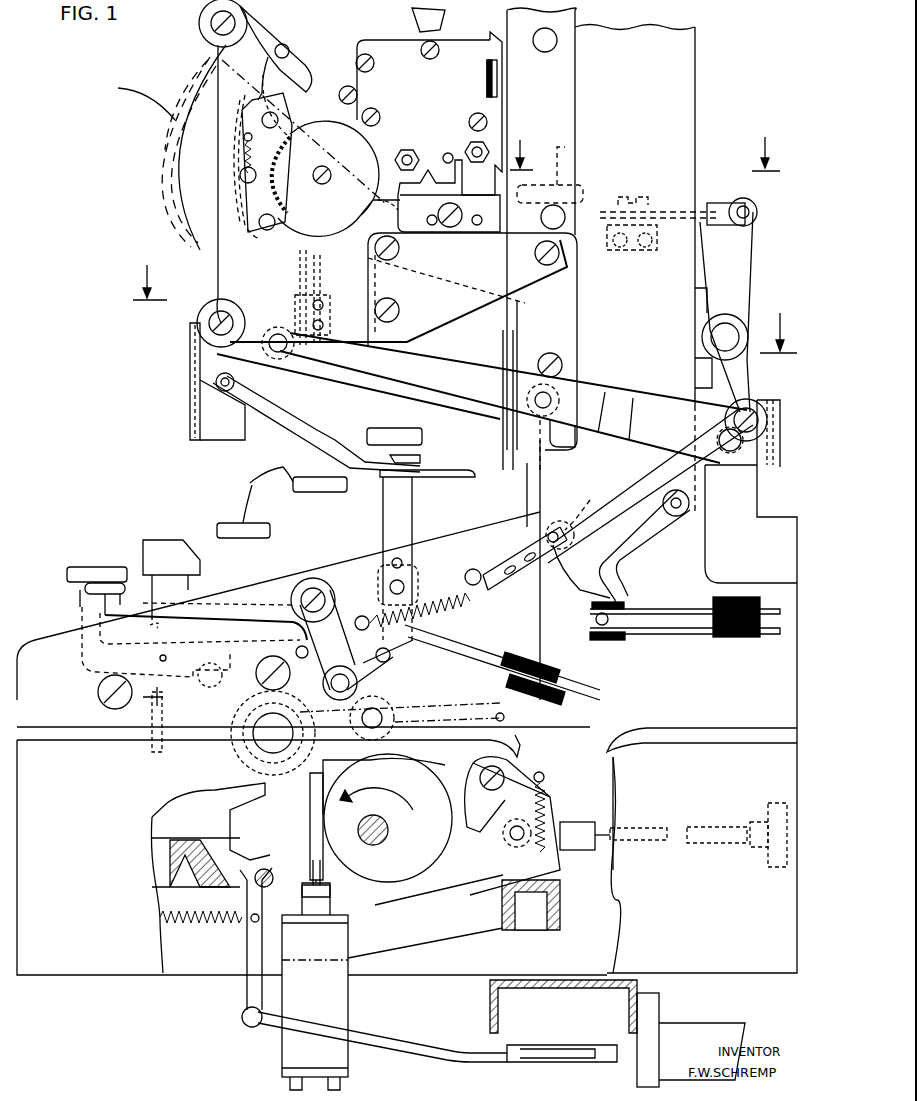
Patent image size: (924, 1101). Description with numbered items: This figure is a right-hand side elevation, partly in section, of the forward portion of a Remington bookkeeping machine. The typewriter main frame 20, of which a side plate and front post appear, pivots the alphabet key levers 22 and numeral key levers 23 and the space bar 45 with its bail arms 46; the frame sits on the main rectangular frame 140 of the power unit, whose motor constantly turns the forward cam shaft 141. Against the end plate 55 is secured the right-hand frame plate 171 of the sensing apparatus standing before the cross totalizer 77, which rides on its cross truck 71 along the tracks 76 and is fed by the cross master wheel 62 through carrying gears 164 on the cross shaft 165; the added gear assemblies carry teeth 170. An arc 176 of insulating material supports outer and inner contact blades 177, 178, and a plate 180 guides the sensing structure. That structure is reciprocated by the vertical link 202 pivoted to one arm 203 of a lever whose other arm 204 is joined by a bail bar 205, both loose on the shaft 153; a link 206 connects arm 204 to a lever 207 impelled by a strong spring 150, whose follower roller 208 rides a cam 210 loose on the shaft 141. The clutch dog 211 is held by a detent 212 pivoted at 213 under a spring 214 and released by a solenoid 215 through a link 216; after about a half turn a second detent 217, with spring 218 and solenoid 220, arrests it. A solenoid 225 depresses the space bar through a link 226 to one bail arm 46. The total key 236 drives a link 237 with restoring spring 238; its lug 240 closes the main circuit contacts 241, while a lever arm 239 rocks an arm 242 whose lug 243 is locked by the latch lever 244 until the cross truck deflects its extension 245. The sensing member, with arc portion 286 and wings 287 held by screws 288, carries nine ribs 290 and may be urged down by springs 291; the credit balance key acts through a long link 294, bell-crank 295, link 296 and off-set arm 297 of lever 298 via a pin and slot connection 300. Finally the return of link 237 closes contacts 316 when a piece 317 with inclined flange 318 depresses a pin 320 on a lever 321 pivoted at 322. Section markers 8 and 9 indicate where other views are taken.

The section line 8 is at (645, 162).
The section line 9 is at (465, 320).
The main frame 20 is at (697, 90).
The alphabet key levers 22 is at (282, 502).
The numeral key levers 23 is at (90, 573).
The space bar 45 is at (170, 540).
The bail arms 46 is at (150, 630).
The end plate 55 is at (568, 270).
The cross master wheel 62 is at (410, 228).
The cross truck 71 is at (486, 80).
The tracks 76 is at (520, 230).
The cross totalizer 77 is at (385, 40).
The main rectangular frame 140 is at (733, 743).
The forward cam shaft 141 is at (368, 840).
The strong spring 150 is at (139, 724).
The shaft 153 is at (730, 452).
The carrying gears 164 is at (418, 175).
The cross shaft 165 is at (331, 175).
The teeth 170 is at (295, 220).
The right-hand frame plate 171 is at (515, 285).
The arc of insulating material 176 is at (165, 135).
The outer contact blade 177 is at (165, 203).
The inner contact blade 178 is at (183, 155).
The plate 180 is at (302, 75).
The vertical link 202 is at (263, 298).
The lever arm 203 is at (355, 368).
The lever arm 204 is at (630, 416).
The bail bar 205 is at (763, 407).
The link 206 is at (555, 442).
The lever 207 is at (503, 722).
The follower roller 208 is at (395, 717).
The cam 210 is at (420, 860).
The clutch dog 211 is at (283, 818).
The detent 212 is at (246, 957).
The pivot 213 is at (258, 886).
The spring 214 is at (222, 925).
The solenoid 215 is at (665, 1028).
The link 216 is at (395, 1045).
The second detent 217 is at (468, 773).
The spring 218 is at (545, 792).
The solenoid 220 is at (770, 800).
The solenoid 225 is at (345, 1000).
The link 226 is at (320, 785).
The total key 236 is at (95, 603).
The link 237 is at (368, 673).
The restoring spring 238 is at (440, 575).
The lever arm 239 is at (723, 370).
The lug 240 is at (383, 648).
The main circuit contacts 241 is at (445, 620).
The arm 242 is at (745, 248).
The lug 243 is at (752, 216).
The latch lever 244 is at (682, 212).
The extension 245 is at (550, 172).
The arc-shaped portion 286 is at (224, 166).
The wings 287 is at (300, 92).
The screws 288 is at (345, 95).
The ribs 290 is at (278, 160).
The springs 291 is at (315, 120).
The long horizontal link 294 is at (490, 450).
The horizontal bell-crank 295 is at (405, 456).
The link 296 is at (300, 425).
The off-set arm 297 is at (203, 412).
The lever 298 is at (222, 352).
The pin and slot connection 300 is at (237, 385).
The contacts 316 is at (600, 622).
The piece 317 is at (520, 553).
The inclined flange 318 is at (553, 534).
The pin 320 is at (580, 508).
The lever 321 is at (632, 540).
The pivot 322 is at (690, 503).